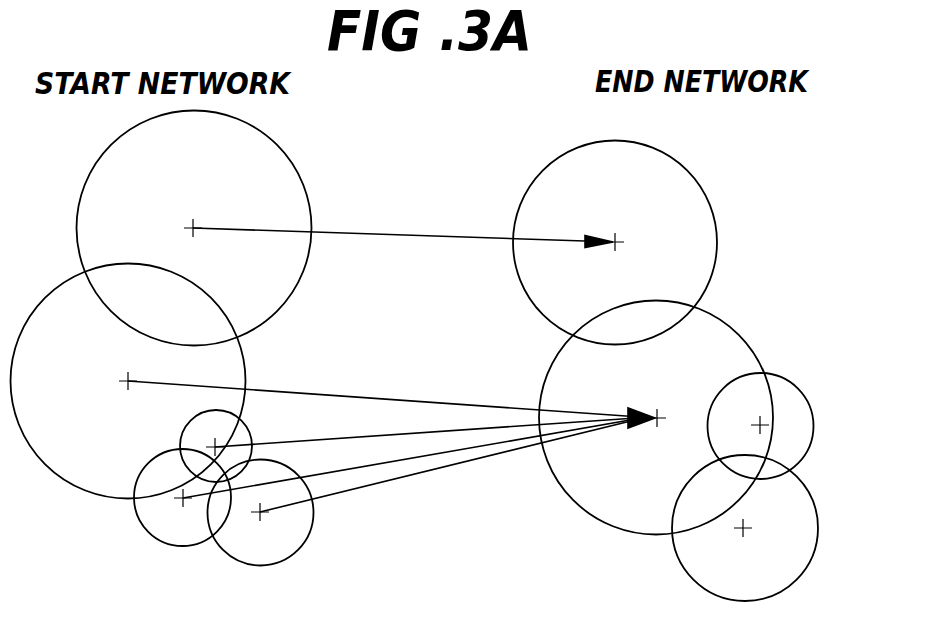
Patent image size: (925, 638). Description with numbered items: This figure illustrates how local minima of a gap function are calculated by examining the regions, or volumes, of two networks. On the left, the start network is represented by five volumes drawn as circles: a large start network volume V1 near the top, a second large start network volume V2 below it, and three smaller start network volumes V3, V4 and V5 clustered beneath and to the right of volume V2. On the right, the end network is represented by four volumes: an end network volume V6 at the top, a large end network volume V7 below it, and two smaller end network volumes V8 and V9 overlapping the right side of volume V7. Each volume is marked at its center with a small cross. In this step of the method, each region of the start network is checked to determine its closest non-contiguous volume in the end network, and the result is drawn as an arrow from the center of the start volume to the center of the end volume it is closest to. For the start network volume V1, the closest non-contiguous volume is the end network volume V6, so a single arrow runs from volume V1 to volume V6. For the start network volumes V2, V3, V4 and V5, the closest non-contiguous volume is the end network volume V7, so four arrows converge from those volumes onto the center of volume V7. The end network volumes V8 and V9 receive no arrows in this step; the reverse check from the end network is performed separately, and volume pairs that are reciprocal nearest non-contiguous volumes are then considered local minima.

The start network volume V1 is at (194, 228).
The start network volume V2 is at (128, 381).
The start network volume V3 is at (216, 440).
The start network volume V4 is at (182, 497).
The start network volume V5 is at (261, 513).
The end network volume V6 is at (615, 243).
The end network volume V7 is at (656, 418).
The end network volume V8 is at (761, 426).
The end network volume V9 is at (745, 528).